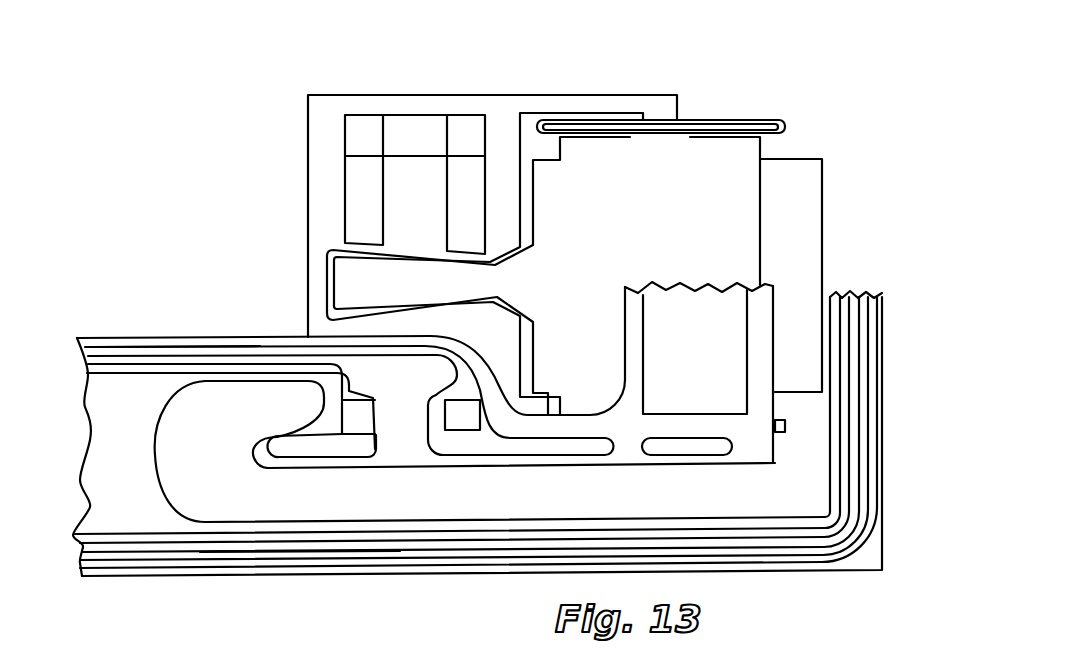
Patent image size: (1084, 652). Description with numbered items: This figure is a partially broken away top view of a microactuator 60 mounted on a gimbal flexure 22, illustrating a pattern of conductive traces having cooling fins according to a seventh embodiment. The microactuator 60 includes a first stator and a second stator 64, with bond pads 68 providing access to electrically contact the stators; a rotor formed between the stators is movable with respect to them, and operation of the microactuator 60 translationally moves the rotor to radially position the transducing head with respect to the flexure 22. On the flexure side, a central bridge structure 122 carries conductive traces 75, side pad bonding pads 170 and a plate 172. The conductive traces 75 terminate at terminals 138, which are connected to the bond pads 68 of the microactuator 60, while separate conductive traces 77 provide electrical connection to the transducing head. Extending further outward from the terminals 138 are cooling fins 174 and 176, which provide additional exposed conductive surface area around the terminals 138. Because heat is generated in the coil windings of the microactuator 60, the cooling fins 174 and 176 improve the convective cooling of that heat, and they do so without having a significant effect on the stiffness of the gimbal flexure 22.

The flexure 22 is at (200, 336).
The microactuator 60 is at (329, 87).
The second stator 64 is at (407, 128).
The bond pads 68 is at (350, 115).
The conductive traces 75 is at (147, 372).
The conductive traces 77 is at (290, 537).
The central bridge structure 122 is at (757, 465).
The terminals 138 is at (457, 412).
The side pad bonding pads 170 is at (667, 455).
The plate 172 is at (742, 330).
The cooling fin 174 is at (290, 448).
The cooling fin 176 is at (563, 447).